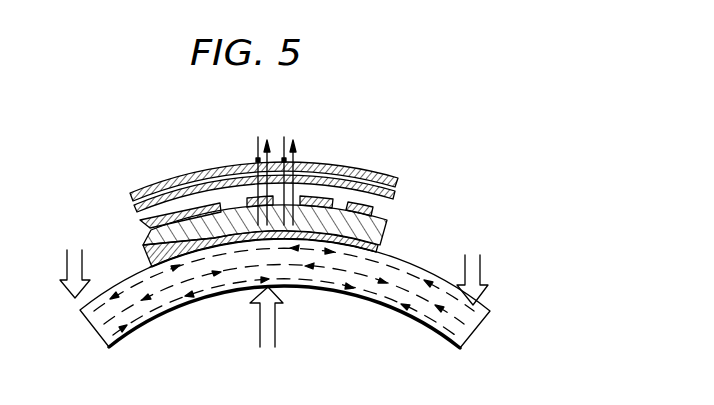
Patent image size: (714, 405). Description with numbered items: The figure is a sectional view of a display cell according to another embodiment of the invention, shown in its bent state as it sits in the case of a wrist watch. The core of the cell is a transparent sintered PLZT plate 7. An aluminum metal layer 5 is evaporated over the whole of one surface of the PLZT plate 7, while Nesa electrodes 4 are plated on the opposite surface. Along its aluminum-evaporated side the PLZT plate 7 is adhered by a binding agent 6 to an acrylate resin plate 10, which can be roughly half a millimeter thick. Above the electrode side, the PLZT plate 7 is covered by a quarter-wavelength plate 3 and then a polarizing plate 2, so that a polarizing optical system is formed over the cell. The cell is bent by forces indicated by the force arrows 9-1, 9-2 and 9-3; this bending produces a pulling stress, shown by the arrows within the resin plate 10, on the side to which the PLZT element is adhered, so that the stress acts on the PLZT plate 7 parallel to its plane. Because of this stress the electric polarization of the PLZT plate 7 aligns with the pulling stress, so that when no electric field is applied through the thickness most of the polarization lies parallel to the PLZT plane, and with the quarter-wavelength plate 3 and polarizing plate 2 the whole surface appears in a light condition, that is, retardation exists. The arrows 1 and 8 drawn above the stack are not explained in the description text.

The ion flow arrow 1 is at (258, 155).
The electron flow arrow 8 is at (300, 157).
The polarizing plate 2 is at (400, 180).
The quarter wavelength plate 3 is at (400, 197).
The Nesa electrodes 4 is at (375, 210).
The aluminum metal layer 5 is at (377, 250).
The binding agent 6 is at (336, 243).
The transparent sintered PLZT plate 7 is at (138, 240).
The force arrow 9-1 is at (60, 267).
The force arrow 9-2 is at (271, 334).
The force arrow 9-3 is at (488, 274).
The acrylate resin plate 10 is at (478, 340).